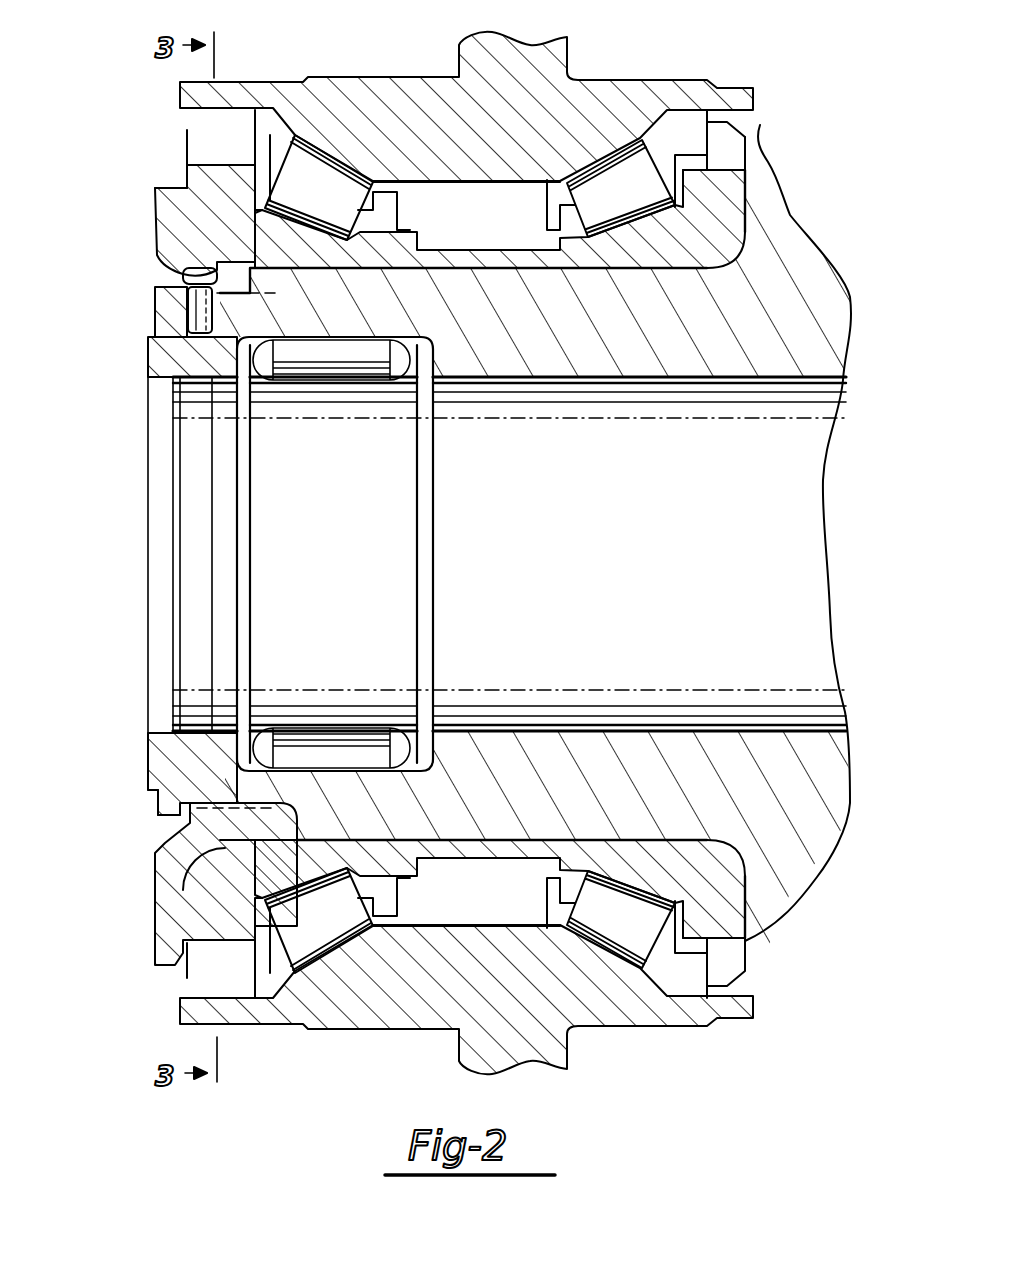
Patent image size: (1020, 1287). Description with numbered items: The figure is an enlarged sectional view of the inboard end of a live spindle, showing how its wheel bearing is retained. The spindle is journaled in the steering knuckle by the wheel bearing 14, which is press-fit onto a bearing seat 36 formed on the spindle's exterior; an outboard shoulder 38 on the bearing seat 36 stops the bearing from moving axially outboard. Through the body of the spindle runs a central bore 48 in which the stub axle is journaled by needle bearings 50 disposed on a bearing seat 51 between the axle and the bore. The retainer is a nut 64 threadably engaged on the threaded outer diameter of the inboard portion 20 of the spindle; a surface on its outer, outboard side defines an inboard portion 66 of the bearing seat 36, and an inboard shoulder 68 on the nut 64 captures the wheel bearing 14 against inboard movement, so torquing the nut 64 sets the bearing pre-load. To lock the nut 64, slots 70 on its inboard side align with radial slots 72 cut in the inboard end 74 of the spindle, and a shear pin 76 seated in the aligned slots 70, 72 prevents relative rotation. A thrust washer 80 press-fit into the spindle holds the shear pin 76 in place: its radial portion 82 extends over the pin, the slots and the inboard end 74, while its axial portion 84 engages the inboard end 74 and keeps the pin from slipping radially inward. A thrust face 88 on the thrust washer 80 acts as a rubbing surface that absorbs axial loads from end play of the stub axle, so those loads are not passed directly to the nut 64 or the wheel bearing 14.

The wheel bearing 14 is at (673, 80).
The inboard portion of the spindle 20 is at (522, 345).
The bearing seat 36 is at (512, 235).
The outboard shoulder 38 is at (762, 128).
The central bore 48 is at (635, 380).
The needle bearings 50 is at (350, 375).
The bearing seat 51 is at (355, 770).
The nut 64 is at (158, 220).
The inboard portion of the bearing seat 66 is at (267, 253).
The inboard shoulder 68 is at (160, 200).
The slots 70 is at (183, 273).
The radial slots 72 is at (207, 273).
The inboard end of the spindle 74 is at (340, 253).
The shear pin 76 is at (188, 303).
The thrust washer 80 is at (187, 748).
The radial portion 82 is at (167, 312).
The axial portion 84 is at (167, 347).
The thrust face 88 is at (155, 778).